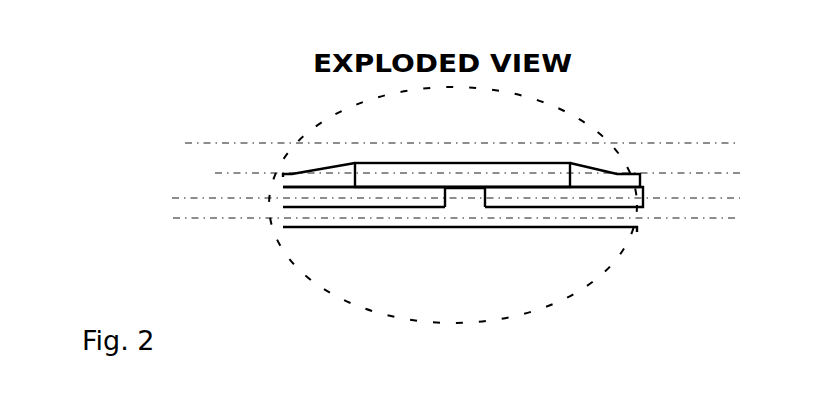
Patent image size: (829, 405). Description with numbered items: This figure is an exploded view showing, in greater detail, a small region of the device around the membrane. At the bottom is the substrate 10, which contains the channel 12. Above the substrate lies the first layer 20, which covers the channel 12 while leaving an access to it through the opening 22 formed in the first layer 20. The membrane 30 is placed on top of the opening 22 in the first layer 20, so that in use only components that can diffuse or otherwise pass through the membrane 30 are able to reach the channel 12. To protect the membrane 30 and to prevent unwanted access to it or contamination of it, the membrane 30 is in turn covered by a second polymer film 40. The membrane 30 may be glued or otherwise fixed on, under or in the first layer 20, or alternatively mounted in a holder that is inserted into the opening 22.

The substrate 10 is at (453, 205).
The channel 12 is at (628, 222).
The first layer 20 is at (627, 196).
The opening 22 is at (470, 205).
The membrane 30 is at (548, 175).
The second polymer film 40 is at (615, 174).